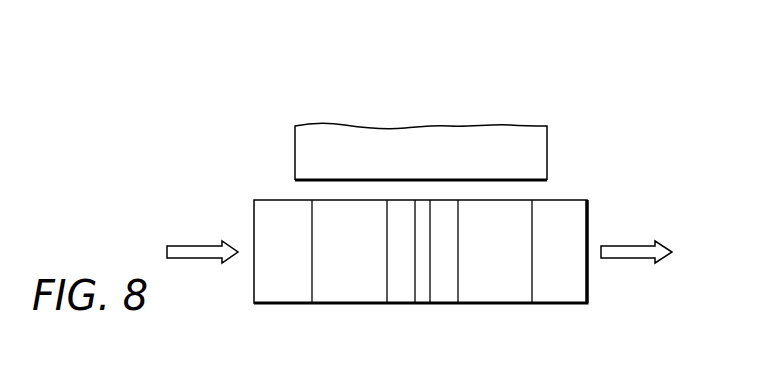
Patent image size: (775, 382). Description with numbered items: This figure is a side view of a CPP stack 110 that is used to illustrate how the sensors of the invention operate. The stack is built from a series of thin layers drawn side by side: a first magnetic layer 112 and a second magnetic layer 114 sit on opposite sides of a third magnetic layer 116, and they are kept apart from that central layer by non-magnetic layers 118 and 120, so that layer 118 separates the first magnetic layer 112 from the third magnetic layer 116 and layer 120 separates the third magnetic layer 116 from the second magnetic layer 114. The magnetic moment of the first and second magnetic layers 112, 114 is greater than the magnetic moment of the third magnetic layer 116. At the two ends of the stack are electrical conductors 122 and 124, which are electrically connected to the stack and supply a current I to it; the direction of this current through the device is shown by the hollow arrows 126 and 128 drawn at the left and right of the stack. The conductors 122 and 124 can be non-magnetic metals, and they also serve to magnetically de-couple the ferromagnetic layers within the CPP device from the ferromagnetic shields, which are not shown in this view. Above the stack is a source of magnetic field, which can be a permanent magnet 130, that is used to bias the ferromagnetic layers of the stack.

The CPP stack 110 is at (590, 157).
The first magnetic layer 112 is at (350, 296).
The second magnetic layer 114 is at (507, 297).
The third magnetic layer 116 is at (423, 297).
The non-magnetic layer 118 is at (398, 208).
The non-magnetic layer 120 is at (440, 208).
The electrical conductor 122 is at (262, 285).
The electrical conductor 124 is at (577, 285).
The arrow 126 is at (192, 243).
The arrow 128 is at (645, 257).
The permanent magnet 130 is at (389, 138).